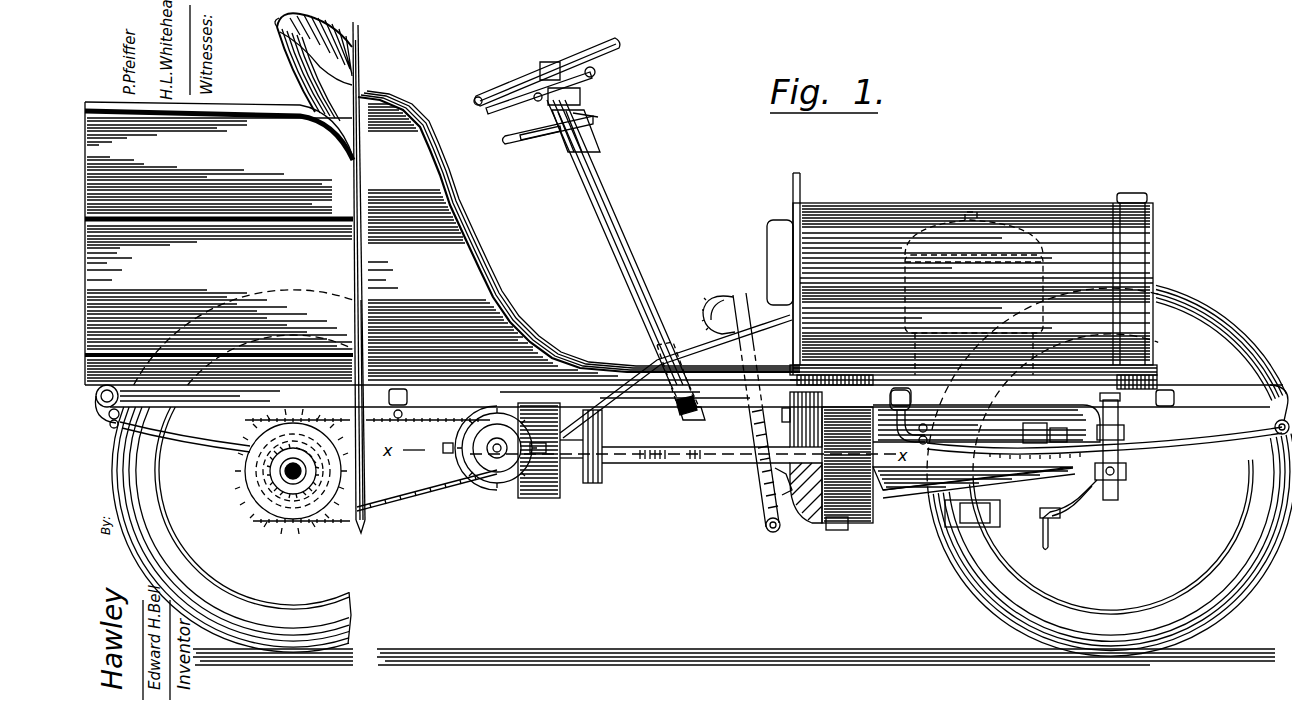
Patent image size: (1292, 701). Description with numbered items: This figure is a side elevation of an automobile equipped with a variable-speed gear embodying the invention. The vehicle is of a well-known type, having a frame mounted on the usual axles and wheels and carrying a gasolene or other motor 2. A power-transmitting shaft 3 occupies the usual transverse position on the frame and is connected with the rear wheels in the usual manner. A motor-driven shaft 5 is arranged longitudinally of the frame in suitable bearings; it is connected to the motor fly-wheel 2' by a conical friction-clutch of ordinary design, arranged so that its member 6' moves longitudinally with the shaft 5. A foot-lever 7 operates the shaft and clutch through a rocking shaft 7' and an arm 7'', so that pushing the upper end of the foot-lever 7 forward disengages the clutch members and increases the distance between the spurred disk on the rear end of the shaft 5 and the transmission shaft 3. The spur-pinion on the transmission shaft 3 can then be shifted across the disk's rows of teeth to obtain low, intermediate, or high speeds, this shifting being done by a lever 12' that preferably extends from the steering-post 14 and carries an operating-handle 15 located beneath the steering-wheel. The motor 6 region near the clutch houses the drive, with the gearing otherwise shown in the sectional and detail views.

The motor 2 is at (1081, 432).
The motor fly-wheel 2' is at (840, 532).
The power-transmitting shaft 3 is at (468, 458).
The motor-driven shaft 5 is at (660, 447).
The motor 6 is at (831, 465).
The friction-clutch member 6' is at (776, 418).
The foot-lever 7 is at (718, 401).
The rocking shaft 7' is at (760, 531).
The arm 7'' is at (758, 486).
The lever 12' is at (676, 376).
The steering-post 14 is at (603, 215).
The operating-handle 15 is at (512, 120).